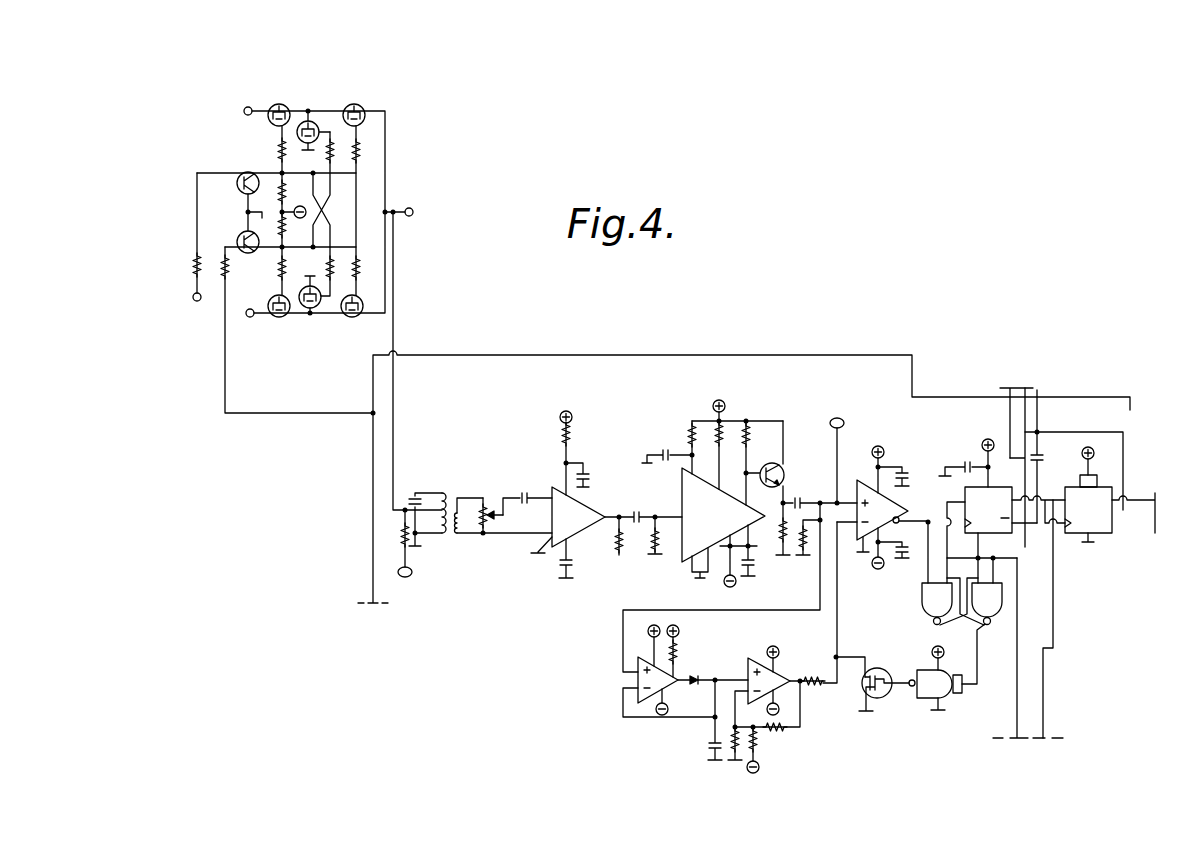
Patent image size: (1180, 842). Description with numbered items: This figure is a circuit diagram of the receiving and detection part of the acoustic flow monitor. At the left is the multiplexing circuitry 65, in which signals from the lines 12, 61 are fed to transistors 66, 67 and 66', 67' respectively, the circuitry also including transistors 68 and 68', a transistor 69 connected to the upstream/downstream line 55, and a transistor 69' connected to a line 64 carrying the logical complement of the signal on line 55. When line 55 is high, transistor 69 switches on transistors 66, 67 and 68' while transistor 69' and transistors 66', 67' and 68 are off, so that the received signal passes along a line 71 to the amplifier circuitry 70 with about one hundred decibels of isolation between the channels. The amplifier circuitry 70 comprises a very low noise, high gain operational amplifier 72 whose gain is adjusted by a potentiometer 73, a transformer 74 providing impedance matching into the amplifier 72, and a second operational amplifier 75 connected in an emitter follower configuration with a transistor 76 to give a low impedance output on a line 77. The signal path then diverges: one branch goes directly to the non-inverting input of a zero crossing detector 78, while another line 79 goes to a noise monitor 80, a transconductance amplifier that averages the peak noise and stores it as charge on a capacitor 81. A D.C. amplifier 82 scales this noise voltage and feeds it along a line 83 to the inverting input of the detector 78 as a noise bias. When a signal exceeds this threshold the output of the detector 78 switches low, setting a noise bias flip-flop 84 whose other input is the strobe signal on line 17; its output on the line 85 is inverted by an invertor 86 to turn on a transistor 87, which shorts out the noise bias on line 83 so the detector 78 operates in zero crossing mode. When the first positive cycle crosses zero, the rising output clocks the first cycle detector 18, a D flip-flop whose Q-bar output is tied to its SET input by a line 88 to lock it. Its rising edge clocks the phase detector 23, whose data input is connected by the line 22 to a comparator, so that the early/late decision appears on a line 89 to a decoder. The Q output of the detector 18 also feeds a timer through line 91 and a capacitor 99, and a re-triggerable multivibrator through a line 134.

The line 12 is at (250, 318).
The line 17 is at (1015, 735).
The first cycle detector 18 is at (990, 487).
The line 22 is at (1056, 630).
The phase detector 23 is at (1093, 540).
The upstream/downstream line 55 is at (325, 432).
The line 61 is at (248, 105).
The line 64 is at (192, 289).
The multiplexing circuitry 65 is at (184, 212).
The transistor 66 is at (283, 330).
The transistor 66' is at (283, 89).
The transistor 67 is at (351, 330).
The transistor 67' is at (357, 89).
The transistor 68 is at (316, 321).
The transistor 68' is at (317, 97).
The transistor 69 is at (246, 262).
The transistor 69' is at (236, 154).
The amplifier circuitry 70 is at (620, 444).
The line 71 is at (397, 283).
The operational amplifier 72 is at (583, 533).
The potentiometer 73 is at (484, 500).
The transformer 74 is at (455, 492).
The second operational amplifier 75 is at (683, 555).
The transistor 76 is at (785, 473).
The line 77 is at (804, 502).
The zero crossing detector 78 is at (900, 508).
The line 79 is at (790, 609).
The noise monitor 80 is at (638, 687).
The capacitor 81 is at (708, 746).
The D.C. amplifier 82 is at (783, 678).
The line 83 is at (838, 606).
The noise bias flip-flop 84 is at (958, 630).
The line 85 is at (977, 680).
The invertor 86 is at (918, 700).
The transistor 87 is at (878, 702).
The line 88 is at (1025, 547).
The line 89 is at (1143, 498).
The line 91 is at (1030, 390).
The capacitor 99 is at (1043, 465).
The line 134 is at (1000, 390).